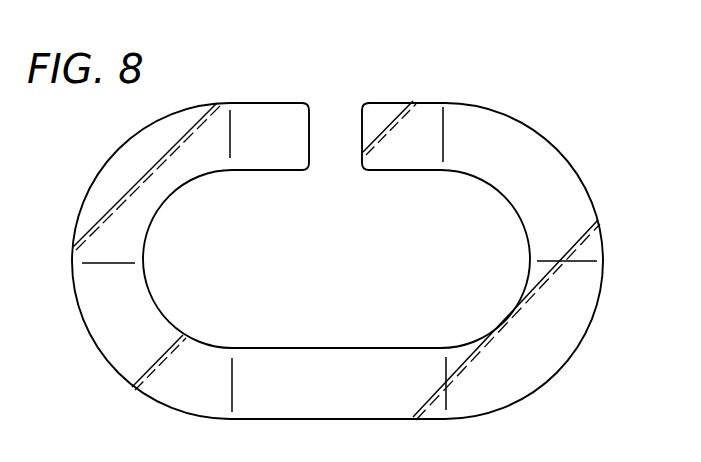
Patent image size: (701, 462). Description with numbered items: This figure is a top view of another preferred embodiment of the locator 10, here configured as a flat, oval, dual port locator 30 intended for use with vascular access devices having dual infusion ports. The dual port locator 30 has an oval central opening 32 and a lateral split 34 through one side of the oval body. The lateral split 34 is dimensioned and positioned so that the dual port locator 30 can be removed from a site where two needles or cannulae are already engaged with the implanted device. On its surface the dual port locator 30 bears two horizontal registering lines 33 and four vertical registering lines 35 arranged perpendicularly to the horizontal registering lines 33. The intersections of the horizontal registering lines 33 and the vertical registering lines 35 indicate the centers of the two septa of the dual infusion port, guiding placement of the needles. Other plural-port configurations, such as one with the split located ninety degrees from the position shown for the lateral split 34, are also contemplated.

The locator 10 is at (367, 222).
The dual port locator 30 is at (520, 121).
The oval central opening 32 is at (159, 309).
The horizontal registering lines 33 is at (582, 260).
The lateral split 34 is at (342, 120).
The vertical registering lines 35 is at (232, 143).